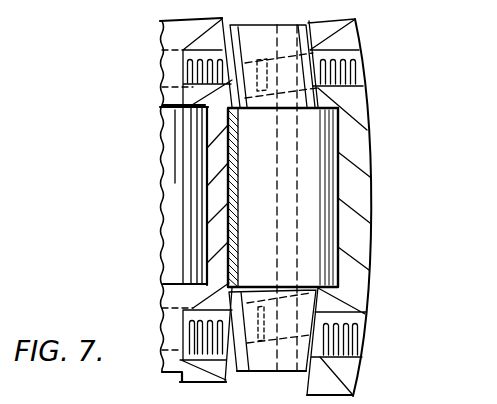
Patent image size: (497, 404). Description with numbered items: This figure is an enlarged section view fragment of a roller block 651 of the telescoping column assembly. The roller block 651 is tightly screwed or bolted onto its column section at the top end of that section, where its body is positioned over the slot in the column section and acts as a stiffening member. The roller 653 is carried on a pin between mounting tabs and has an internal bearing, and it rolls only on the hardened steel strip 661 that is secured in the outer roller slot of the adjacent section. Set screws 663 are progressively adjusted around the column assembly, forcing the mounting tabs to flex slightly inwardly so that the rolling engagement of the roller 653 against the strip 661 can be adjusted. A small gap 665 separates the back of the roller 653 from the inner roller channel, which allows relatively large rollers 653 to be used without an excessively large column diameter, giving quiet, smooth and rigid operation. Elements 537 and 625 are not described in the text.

The end cap 537 is at (355, 370).
The bearing 625 is at (323, 267).
The roller block 651 is at (267, 352).
The roller 653 is at (320, 212).
The strip 661 is at (167, 123).
The set screw 663 is at (355, 330).
The gap 665 is at (338, 152).